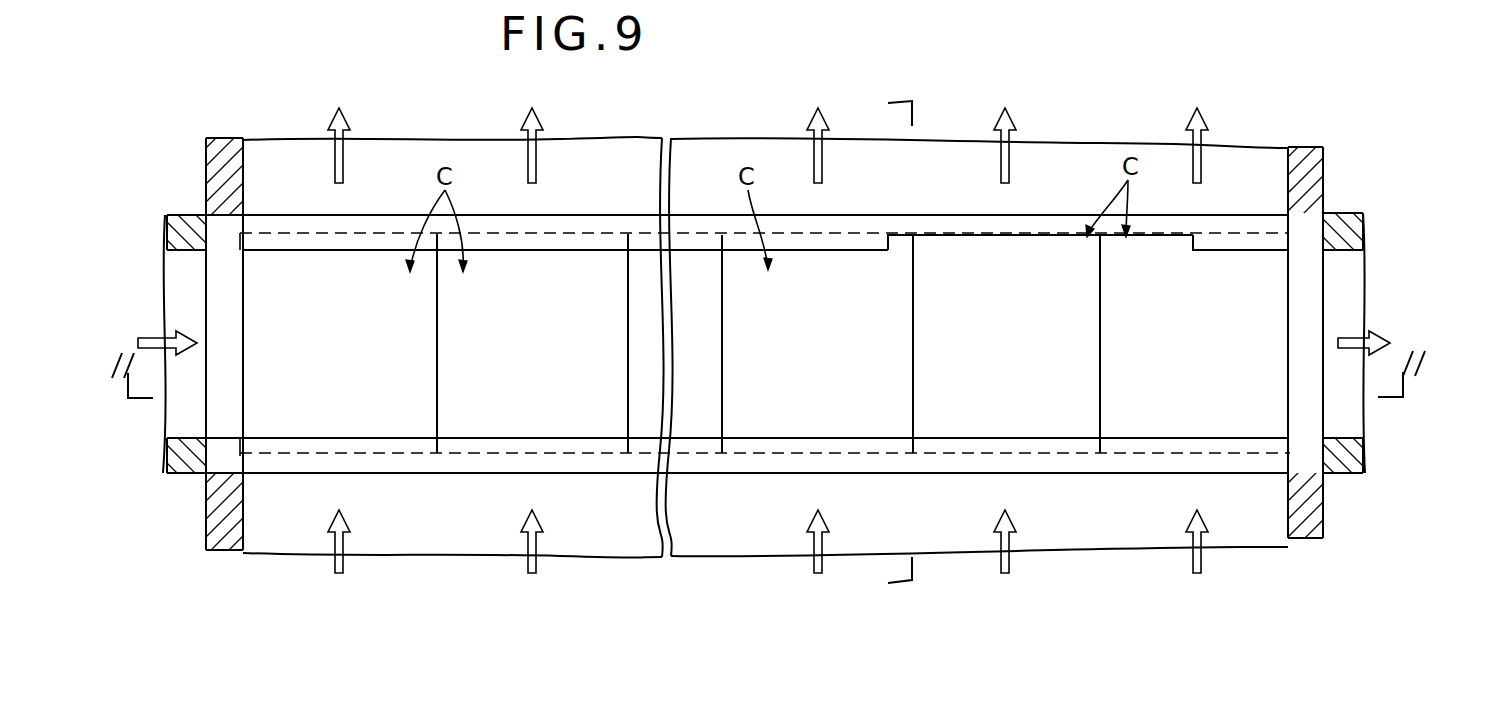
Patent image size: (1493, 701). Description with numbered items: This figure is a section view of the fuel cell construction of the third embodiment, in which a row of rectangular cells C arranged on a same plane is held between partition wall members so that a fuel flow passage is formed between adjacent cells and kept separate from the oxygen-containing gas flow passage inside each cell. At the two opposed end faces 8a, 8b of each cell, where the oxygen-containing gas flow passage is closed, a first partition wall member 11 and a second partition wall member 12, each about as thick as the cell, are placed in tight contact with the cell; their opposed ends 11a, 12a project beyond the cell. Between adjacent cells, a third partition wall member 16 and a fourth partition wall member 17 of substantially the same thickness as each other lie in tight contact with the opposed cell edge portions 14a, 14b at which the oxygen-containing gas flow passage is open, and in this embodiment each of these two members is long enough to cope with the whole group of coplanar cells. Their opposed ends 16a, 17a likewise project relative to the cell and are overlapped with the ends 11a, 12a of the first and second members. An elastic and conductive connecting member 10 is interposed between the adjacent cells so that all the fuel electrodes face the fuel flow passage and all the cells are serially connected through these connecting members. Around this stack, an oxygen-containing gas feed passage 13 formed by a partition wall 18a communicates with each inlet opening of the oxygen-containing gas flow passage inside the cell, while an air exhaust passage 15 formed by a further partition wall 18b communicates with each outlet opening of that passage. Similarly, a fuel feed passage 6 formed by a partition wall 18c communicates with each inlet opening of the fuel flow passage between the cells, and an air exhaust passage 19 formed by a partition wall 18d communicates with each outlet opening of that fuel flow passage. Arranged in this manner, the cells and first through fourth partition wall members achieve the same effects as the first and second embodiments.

The fuel feed passage 6 is at (173, 344).
The end face of the cell 8a is at (233, 353).
The end face of the cell 8b is at (1290, 323).
The connecting member 10 is at (881, 345).
The first partition wall member 11 is at (232, 410).
The end of first partition wall member 11a is at (240, 456).
The second partition wall member 12 is at (1290, 398).
The end of second partition wall member 12a is at (1290, 255).
The oxygen-containing gas feed passage 13 is at (765, 537).
The cell edge portion 14a is at (1000, 458).
The cell edge portion 14b is at (1005, 237).
The air exhaust passage 15 is at (765, 150).
The third partition wall member 16 is at (1090, 475).
The end of third partition wall member 16a is at (238, 462).
The fourth partition wall member 17 is at (870, 220).
The end of fourth partition wall member 17a is at (1287, 215).
The partition wall 18a is at (1320, 528).
The partition wall 18b is at (1325, 160).
The partition wall 18c is at (175, 473).
The partition wall 18d is at (1355, 474).
The air exhaust passage 19 is at (1358, 343).